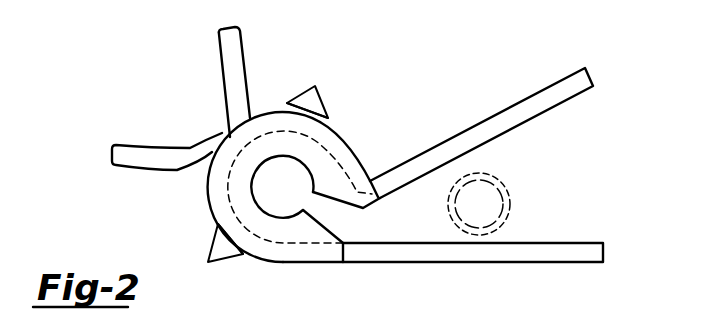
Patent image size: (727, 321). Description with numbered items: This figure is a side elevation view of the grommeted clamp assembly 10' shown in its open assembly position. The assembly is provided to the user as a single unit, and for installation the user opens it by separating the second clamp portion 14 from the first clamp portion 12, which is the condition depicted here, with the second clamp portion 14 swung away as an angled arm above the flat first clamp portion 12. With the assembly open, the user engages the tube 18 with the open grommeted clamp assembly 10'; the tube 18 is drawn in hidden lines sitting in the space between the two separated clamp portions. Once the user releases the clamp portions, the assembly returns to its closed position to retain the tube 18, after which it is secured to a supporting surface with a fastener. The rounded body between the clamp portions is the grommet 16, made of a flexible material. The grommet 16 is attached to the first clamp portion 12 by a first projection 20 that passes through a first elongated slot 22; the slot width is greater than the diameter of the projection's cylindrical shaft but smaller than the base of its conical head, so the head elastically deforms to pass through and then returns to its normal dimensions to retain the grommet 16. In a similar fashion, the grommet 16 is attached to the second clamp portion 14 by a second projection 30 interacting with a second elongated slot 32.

The grommeted clamp assembly 10' is at (110, 48).
The first clamp portion 12 is at (548, 262).
The second clamp portion 14 is at (557, 78).
The grommet 16 is at (222, 196).
The tube 18 is at (510, 203).
The first projection 20 is at (216, 250).
The first elongated slot 22 is at (243, 254).
The second projection 30 is at (314, 86).
The second elongated slot 32 is at (328, 118).